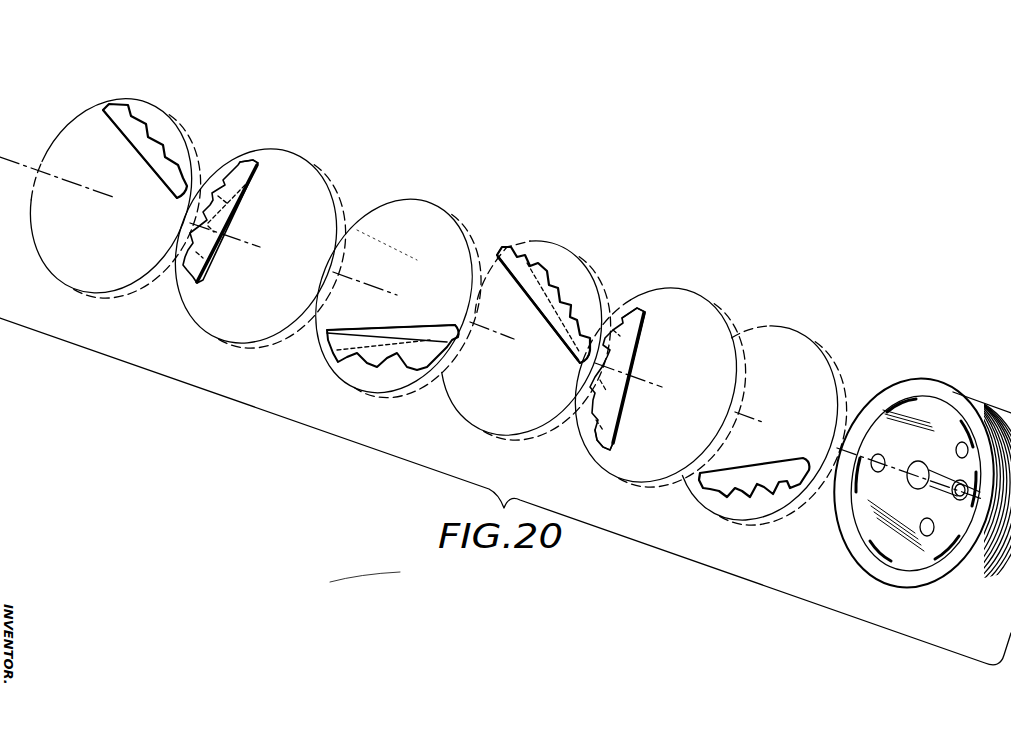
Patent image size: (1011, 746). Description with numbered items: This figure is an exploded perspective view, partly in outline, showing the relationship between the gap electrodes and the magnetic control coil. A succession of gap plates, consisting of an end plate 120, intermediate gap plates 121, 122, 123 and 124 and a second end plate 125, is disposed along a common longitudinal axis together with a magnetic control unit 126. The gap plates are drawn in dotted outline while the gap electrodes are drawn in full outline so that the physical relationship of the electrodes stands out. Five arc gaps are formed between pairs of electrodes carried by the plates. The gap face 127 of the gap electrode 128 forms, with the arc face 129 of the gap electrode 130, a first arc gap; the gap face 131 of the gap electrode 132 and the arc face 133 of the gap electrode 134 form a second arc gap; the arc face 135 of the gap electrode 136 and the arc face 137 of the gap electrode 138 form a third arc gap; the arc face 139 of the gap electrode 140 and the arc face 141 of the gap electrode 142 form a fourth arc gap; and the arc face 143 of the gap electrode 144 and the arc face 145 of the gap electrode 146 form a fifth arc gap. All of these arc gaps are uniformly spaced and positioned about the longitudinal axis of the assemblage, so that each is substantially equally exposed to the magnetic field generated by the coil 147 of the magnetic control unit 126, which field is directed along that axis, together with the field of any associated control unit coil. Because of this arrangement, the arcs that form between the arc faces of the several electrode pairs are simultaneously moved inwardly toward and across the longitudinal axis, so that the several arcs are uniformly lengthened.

The end plate 120 is at (152, 115).
The intermediate gap plate 121 is at (297, 163).
The intermediate gap plate 122 is at (433, 207).
The intermediate gap plate 123 is at (558, 250).
The intermediate gap plate 124 is at (687, 292).
The end plate 125 is at (802, 335).
The magnetic control unit 126 is at (915, 481).
The gap face 127 is at (103, 109).
The gap electrode 128 is at (130, 146).
The arc face 129 is at (262, 170).
The gap electrode 130 is at (238, 202).
The gap face 131 is at (198, 286).
The gap electrode 132 is at (213, 263).
The arc face 133 is at (327, 330).
The gap electrode 134 is at (370, 337).
The arc face 135 is at (455, 323).
The gap electrode 136 is at (417, 330).
The arc face 137 is at (581, 362).
The gap electrode 138 is at (510, 340).
The arc face 139 is at (497, 253).
The gap electrode 140 is at (510, 268).
The arc face 141 is at (643, 309).
The gap electrode 142 is at (640, 340).
The arc face 143 is at (613, 450).
The gap electrode 144 is at (620, 413).
The arc face 145 is at (700, 477).
The gap electrode 146 is at (773, 463).
The coil 147 is at (936, 578).